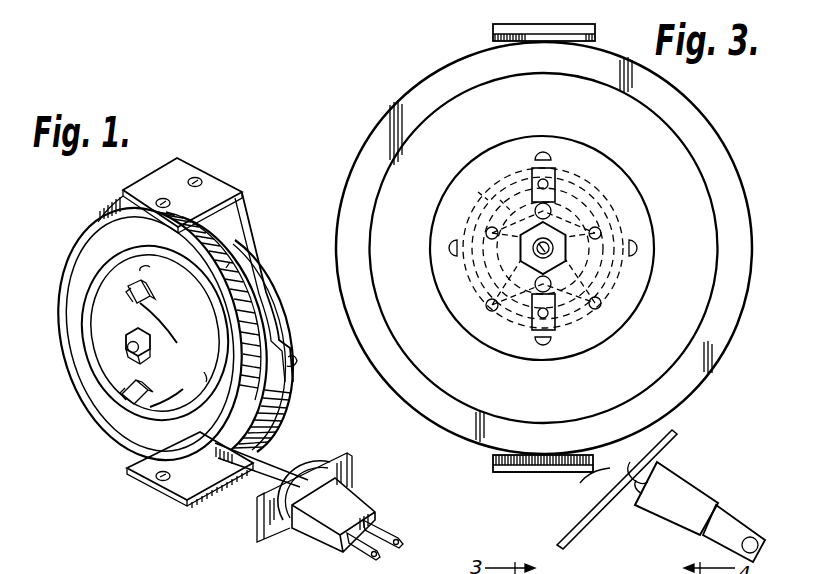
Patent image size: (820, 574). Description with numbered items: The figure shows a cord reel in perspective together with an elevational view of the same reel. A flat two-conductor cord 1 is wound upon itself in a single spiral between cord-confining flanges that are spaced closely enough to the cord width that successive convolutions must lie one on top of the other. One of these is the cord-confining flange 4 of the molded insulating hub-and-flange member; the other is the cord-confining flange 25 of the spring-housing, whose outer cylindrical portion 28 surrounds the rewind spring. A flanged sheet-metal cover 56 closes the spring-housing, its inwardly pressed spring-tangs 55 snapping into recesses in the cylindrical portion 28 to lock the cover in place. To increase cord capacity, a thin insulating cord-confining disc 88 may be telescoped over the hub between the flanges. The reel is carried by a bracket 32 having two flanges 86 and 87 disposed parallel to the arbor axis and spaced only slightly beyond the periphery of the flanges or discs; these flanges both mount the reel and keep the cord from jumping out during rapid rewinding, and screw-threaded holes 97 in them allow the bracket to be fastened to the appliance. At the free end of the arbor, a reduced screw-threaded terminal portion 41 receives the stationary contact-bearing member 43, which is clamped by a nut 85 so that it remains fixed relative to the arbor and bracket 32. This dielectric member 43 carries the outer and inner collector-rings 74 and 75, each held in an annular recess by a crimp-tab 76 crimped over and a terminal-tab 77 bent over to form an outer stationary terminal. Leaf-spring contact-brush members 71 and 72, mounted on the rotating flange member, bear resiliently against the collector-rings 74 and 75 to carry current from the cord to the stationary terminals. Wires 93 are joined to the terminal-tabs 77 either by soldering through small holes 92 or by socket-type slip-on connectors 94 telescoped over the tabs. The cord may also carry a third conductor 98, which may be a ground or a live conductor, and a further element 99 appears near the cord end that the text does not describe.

In FIG. 1, the cord 1 is at (236, 322).
In FIG. 3, the cord 1 is at (594, 485).
In FIG. 1, the cord-confining flange 4 is at (143, 426).
In FIG. 3, the cord-confining flange 4 is at (690, 212).
In FIG. 1, the cord-confining flange 25 is at (228, 268).
In FIG. 1, the outer cylindrical portion 28 is at (258, 282).
In FIG. 1, the bracket 32 is at (246, 226).
In FIG. 3, the bracket 32 is at (597, 39).
In FIG. 1, the screw-threaded terminal portion 41 is at (128, 350).
In FIG. 3, the screw-threaded terminal portion 41 is at (534, 248).
In FIG. 1, the stationary contact-bearing member 43 is at (100, 330).
In FIG. 3, the stationary contact-bearing member 43 is at (637, 206).
In FIG. 1, the spring-tangs 55 is at (300, 385).
In FIG. 1, the sheet-metal cover 56 is at (258, 256).
In FIG. 3, the leaf-spring contact-brush member 71 is at (600, 278).
In FIG. 3, the leaf-spring contact-brush member 72 is at (592, 200).
In FIG. 3, the outer collector-ring 74 is at (505, 202).
In FIG. 3, the inner collector-ring 75 is at (484, 198).
In FIG. 1, the crimp-tab 76 is at (150, 302).
In FIG. 1, the terminal-tab 77 is at (140, 284).
In FIG. 3, the terminal-tab 77 is at (560, 200).
In FIG. 1, the nut 85 is at (147, 356).
In FIG. 3, the nut 85 is at (556, 249).
In FIG. 1, the bracket flange 86 is at (155, 180).
In FIG. 3, the bracket flange 86 is at (597, 28).
In FIG. 1, the bracket flange 87 is at (183, 498).
In FIG. 3, the bracket flange 87 is at (536, 473).
In FIG. 3, the cord-confining disc 88 is at (712, 153).
In FIG. 3, the small holes 92 is at (552, 176).
In FIG. 1, the wires 93 is at (152, 308).
In FIG. 1, the socket-type slip-on connectors 94 is at (130, 291).
In FIG. 1, the screw-threaded holes 97 is at (166, 200).
In FIG. 1, the third conductor 98 is at (303, 473).
In FIG. 3, the third conductor 98 is at (628, 492).
In FIG. 1, the plug stop plate 99 is at (350, 468).
In FIG. 3, the plug stop plate 99 is at (578, 524).